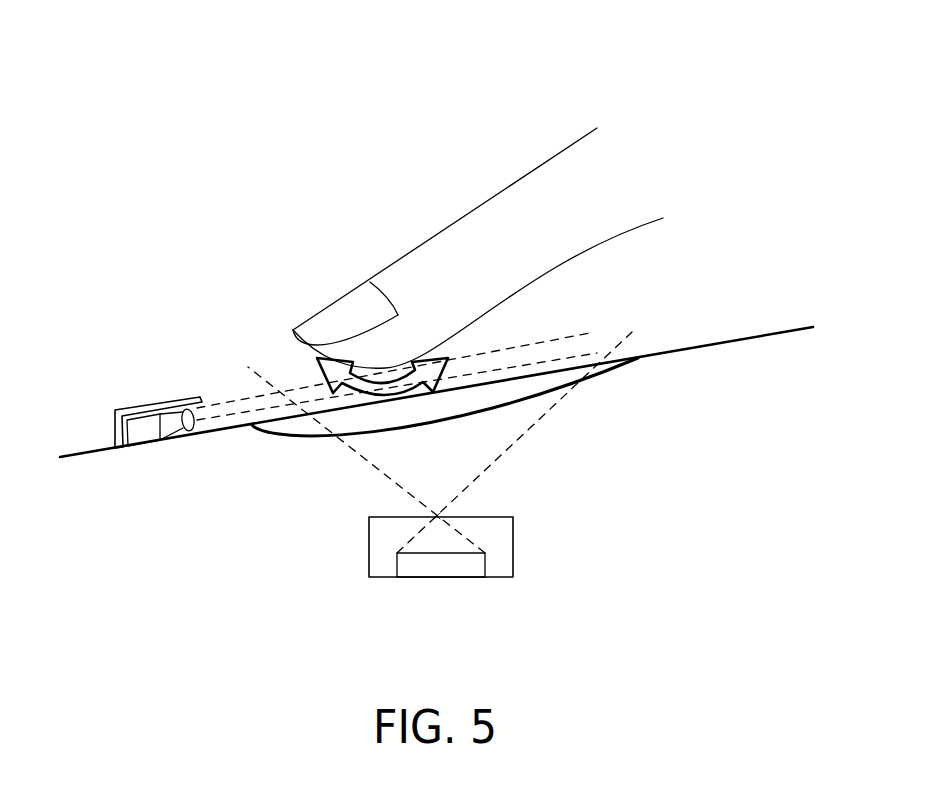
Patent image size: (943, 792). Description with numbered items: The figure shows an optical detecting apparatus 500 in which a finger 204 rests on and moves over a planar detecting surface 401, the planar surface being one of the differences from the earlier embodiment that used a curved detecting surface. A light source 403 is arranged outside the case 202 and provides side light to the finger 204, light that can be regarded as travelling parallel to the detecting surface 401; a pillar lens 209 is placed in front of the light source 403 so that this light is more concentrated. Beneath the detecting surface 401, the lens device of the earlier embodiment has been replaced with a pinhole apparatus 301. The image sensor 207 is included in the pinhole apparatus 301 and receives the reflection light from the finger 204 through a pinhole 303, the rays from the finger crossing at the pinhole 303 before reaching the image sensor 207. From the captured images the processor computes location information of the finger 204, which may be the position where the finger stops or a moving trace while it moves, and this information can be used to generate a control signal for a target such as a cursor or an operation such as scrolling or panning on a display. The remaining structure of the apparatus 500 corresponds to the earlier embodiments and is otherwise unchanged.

The optical detecting apparatus 500 is at (708, 117).
The case 202 is at (748, 368).
The finger 204 is at (443, 242).
The detecting surface 401 is at (613, 382).
The light source 403 is at (142, 425).
The pillar lens 209 is at (188, 433).
The image sensor 207 is at (443, 565).
The pinhole apparatus 301 is at (437, 516).
The pinhole 303 is at (437, 516).